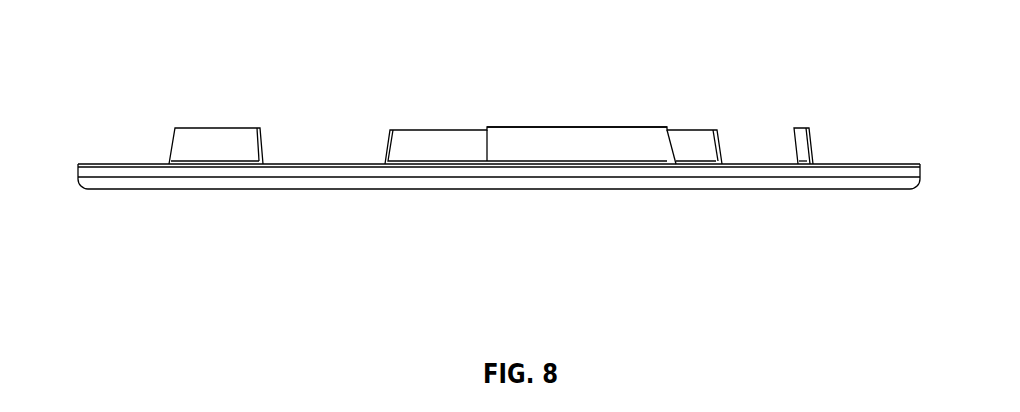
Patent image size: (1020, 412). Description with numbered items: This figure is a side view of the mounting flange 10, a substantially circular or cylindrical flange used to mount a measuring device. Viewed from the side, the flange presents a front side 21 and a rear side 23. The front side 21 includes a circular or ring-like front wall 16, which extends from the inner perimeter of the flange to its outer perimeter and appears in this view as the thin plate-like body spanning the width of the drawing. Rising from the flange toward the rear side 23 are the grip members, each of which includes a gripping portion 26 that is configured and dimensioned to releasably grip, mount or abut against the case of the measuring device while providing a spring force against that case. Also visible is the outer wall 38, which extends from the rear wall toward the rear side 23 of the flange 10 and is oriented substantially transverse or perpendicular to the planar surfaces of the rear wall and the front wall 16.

The mounting flange 10 is at (499, 152).
The front wall 16 is at (499, 233).
The front side 21 is at (490, 243).
The rear side 23 is at (553, 143).
The gripping portion 26 is at (592, 144).
The outer wall 38 is at (747, 171).